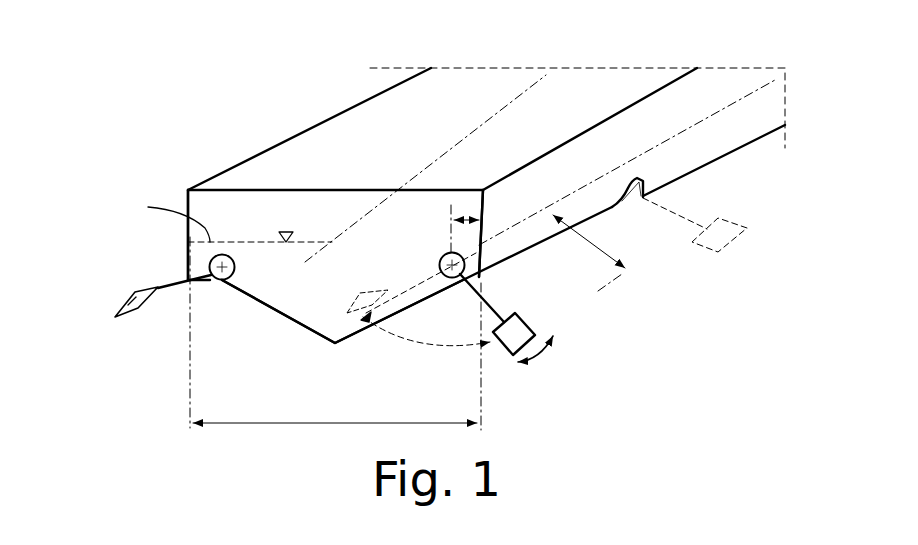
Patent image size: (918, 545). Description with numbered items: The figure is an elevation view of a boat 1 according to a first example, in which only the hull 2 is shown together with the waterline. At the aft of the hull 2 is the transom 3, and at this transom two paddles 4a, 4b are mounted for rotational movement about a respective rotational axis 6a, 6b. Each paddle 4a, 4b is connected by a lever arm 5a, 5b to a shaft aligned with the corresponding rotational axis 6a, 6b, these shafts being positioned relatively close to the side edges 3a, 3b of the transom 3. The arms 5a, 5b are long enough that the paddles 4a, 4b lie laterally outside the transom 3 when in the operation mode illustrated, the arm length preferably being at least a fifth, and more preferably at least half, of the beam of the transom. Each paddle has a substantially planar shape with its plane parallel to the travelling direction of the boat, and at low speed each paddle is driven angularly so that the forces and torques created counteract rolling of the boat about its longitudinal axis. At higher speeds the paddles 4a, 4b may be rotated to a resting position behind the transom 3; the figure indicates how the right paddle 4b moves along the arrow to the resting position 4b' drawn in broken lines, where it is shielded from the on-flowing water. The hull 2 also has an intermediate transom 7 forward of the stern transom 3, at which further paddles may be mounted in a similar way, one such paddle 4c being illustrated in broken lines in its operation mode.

The cutting device 1 is at (218, 66).
The hull 2 is at (513, 256).
The transom 3 is at (280, 302).
The side edge of the transom 3a is at (187, 194).
The side edge of the transom 3b is at (485, 200).
The paddle 4a is at (122, 322).
The paddle 4b is at (508, 360).
The resting position of the paddle 4b' is at (416, 325).
The paddle 4c is at (713, 242).
The arm 5a is at (163, 284).
The arm 5b is at (500, 313).
The rotational axis 6a is at (208, 282).
The rotational axis 6b is at (464, 272).
The intermediate transom 7 is at (642, 199).